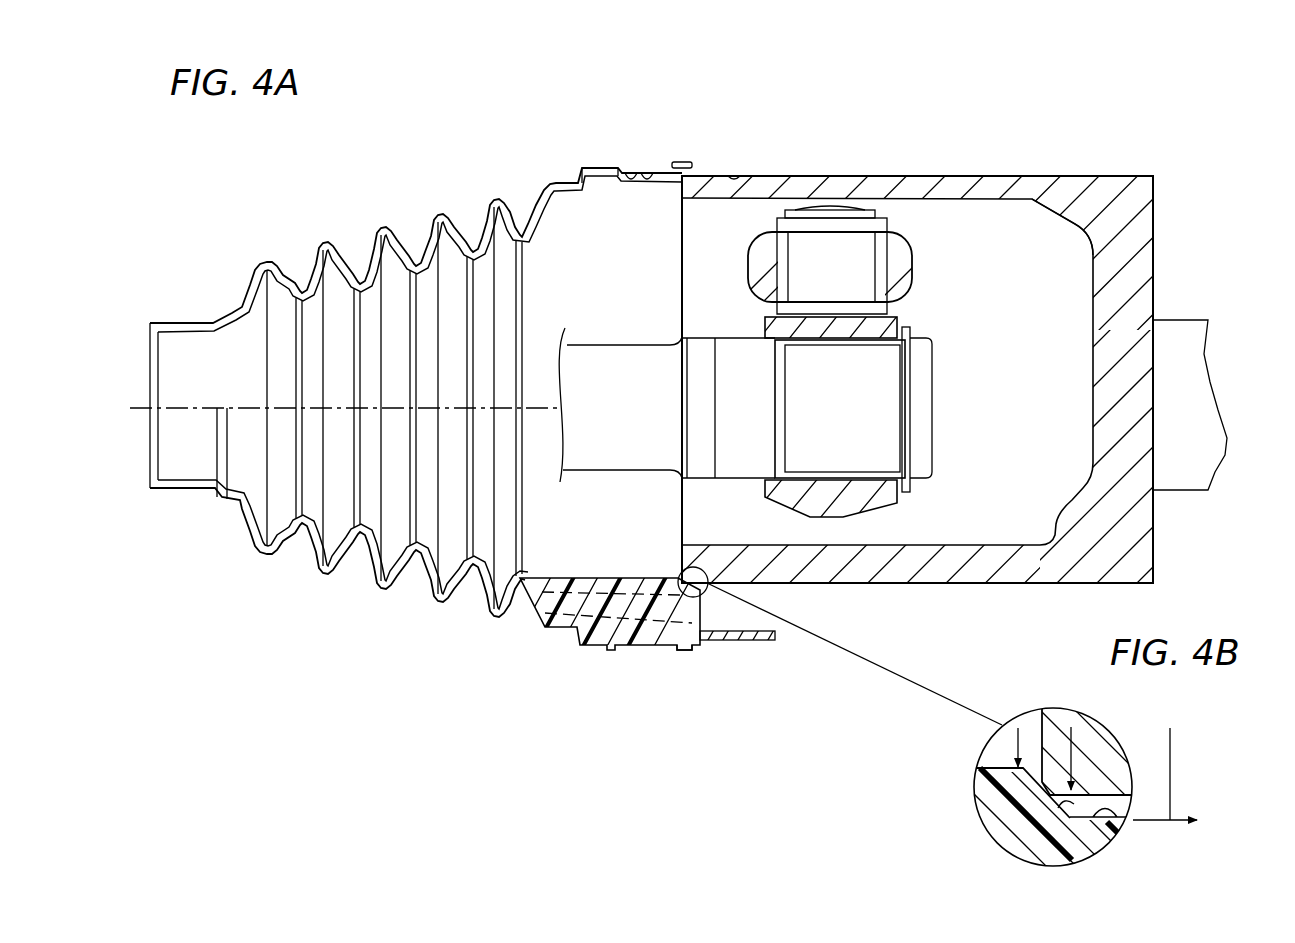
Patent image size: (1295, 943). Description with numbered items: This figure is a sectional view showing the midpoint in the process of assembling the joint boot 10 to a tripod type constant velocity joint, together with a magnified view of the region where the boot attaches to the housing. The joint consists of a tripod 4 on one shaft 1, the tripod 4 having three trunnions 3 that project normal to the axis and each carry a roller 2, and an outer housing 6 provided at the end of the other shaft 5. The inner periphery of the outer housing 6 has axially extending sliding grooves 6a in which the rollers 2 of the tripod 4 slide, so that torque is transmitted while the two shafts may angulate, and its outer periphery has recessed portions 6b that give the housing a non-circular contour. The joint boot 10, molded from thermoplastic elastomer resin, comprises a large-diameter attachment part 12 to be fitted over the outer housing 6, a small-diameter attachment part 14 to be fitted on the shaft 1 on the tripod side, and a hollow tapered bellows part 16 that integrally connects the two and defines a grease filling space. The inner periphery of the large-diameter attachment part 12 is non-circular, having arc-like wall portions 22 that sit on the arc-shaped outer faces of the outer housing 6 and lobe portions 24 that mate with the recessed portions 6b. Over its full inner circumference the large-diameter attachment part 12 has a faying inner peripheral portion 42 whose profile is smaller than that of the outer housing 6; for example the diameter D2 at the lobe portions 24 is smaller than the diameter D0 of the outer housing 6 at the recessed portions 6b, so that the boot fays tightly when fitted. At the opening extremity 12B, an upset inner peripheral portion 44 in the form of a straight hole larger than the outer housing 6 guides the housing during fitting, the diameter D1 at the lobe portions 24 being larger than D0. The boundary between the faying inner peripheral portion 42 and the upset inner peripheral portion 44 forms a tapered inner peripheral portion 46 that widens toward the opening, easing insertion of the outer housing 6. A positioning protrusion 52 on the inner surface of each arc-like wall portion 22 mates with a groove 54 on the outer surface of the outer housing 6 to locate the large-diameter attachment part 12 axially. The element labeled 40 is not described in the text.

In FIG. 4A, the shaft 1 is at (583, 427).
In FIG. 4A, the roller 2 is at (900, 275).
In FIG. 4A, the trunnion 3 is at (828, 250).
In FIG. 4A, the tripod 4 is at (958, 341).
In FIG. 4A, the shaft 5 is at (1197, 474).
In FIG. 4A, the outer housing 6 is at (1110, 190).
In FIG. 4B, the outer housing 6 is at (1055, 727).
In FIG. 4A, the sliding groove 6a is at (963, 200).
In FIG. 4A, the recessed portion 6b is at (897, 585).
In FIG. 4A, the joint boot 10 is at (375, 213).
In FIG. 4A, the large-diameter attachment part 12 is at (557, 185).
In FIG. 4A, the opening extremity 12B is at (683, 657).
In FIG. 4A, the small-diameter attachment part 14 is at (183, 488).
In FIG. 4A, the bellows part 16 is at (318, 573).
In FIG. 4A, the arc-like wall portion 22 is at (690, 160).
In FIG. 4A, the lobe portion 24 is at (593, 573).
In FIG. 4A, the flange 40 is at (740, 645).
In FIG. 4A, the faying inner peripheral portion 42 is at (640, 578).
In FIG. 4B, the faying inner peripheral portion 42 is at (975, 757).
In FIG. 4B, the upset inner peripheral portion 44 is at (1117, 843).
In FIG. 4B, the tapered inner peripheral portion 46 is at (1012, 843).
In FIG. 4A, the positioning protrusion 52 is at (648, 190).
In FIG. 4A, the groove 54 is at (736, 174).
In FIG. 4B, the diameter of the outer housing at the recessed portions D0 is at (1071, 750).
In FIG. 4B, the diameter at the lobe portions of the upset inner peripheral portion D1 is at (1170, 785).
In FIG. 4B, the diameter at the lobe portions of the faying inner peripheral portion D2 is at (1018, 722).